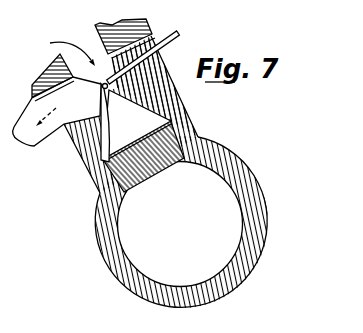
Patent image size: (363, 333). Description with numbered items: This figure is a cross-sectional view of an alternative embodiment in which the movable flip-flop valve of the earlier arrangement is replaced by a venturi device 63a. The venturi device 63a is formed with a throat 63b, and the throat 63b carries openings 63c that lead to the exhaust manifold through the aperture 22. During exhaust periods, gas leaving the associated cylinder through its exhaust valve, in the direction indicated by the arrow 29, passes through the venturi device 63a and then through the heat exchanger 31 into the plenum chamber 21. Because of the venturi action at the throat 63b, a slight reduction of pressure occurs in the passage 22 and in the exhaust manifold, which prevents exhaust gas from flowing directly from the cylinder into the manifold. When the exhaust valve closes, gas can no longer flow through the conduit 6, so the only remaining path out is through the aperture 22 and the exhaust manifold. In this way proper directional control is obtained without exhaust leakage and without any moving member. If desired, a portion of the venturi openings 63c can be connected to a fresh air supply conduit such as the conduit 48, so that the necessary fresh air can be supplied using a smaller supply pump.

The conduit 6 is at (92, 34).
The plenum chamber 21 is at (130, 238).
The aperture 22 is at (68, 140).
The arrow 29 is at (57, 47).
The heat exchanger 31 is at (163, 173).
The fresh air supply conduit 48 is at (172, 39).
The venturi device 63a is at (174, 96).
The throat 63b is at (123, 123).
The openings 63c is at (101, 89).